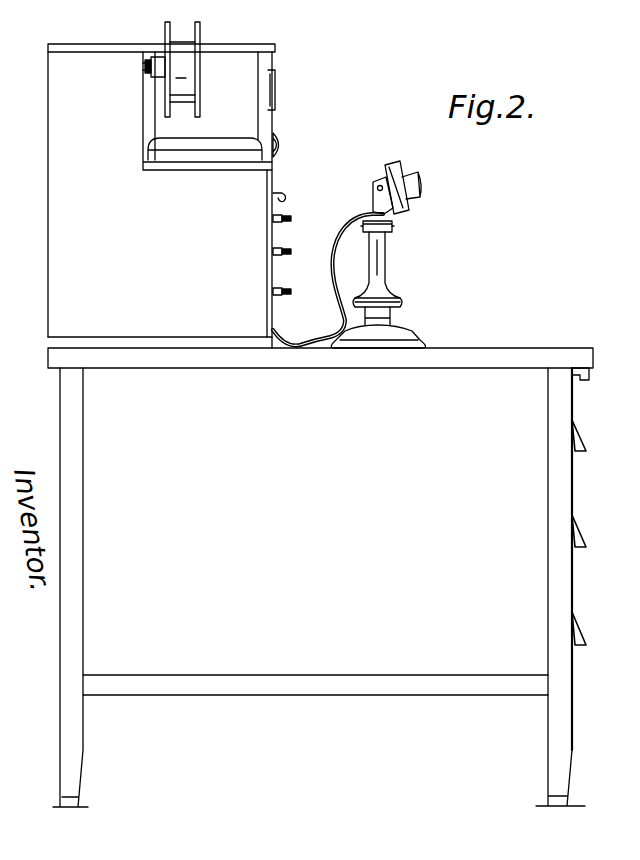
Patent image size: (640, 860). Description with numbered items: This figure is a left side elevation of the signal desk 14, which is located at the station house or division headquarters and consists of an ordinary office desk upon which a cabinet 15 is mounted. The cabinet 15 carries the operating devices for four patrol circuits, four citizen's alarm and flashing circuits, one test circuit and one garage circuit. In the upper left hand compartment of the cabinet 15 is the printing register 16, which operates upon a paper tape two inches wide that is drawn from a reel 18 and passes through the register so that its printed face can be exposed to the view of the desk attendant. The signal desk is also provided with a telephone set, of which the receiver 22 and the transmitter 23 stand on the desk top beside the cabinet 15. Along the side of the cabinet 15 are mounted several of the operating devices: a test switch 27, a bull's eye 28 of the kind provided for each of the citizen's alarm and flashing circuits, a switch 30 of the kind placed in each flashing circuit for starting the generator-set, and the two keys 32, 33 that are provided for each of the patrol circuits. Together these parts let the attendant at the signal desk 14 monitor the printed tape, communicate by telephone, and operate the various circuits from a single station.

The signal desk 14 is at (562, 486).
The cabinet 15 is at (56, 292).
The printing register 16 is at (240, 58).
The reel 18 is at (166, 27).
The receiver 22 is at (387, 273).
The transmitter 23 is at (424, 185).
The test switch 27 is at (292, 218).
The bull's eye 28 is at (285, 146).
The switch 30 is at (287, 196).
The key 32 is at (291, 250).
The key 33 is at (291, 290).